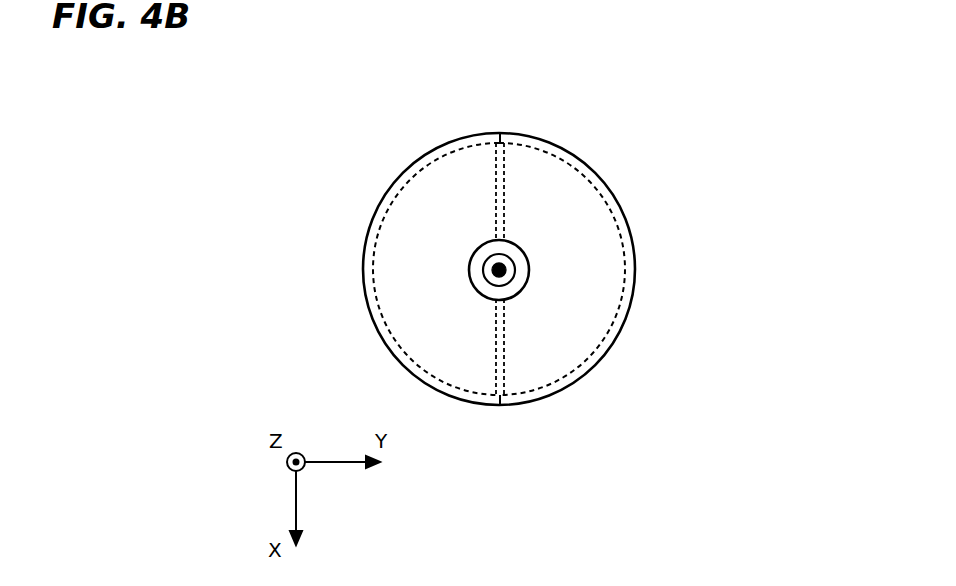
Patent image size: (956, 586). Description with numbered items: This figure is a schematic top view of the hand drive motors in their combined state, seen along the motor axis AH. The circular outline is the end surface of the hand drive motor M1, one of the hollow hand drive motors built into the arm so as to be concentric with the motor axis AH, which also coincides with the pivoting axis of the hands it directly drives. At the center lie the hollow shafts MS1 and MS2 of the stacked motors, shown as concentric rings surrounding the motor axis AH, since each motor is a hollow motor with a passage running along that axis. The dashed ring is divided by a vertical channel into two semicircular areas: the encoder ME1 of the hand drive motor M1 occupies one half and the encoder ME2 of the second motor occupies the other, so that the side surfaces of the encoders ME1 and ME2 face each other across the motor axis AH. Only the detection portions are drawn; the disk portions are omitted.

The hand drive motor M1 is at (642, 192).
The encoder ME1 is at (627, 273).
The encoder ME2 is at (377, 265).
The hollow shaft MS1 is at (528, 273).
The hollow shaft MS2 is at (502, 285).
The motor axis AH is at (505, 263).